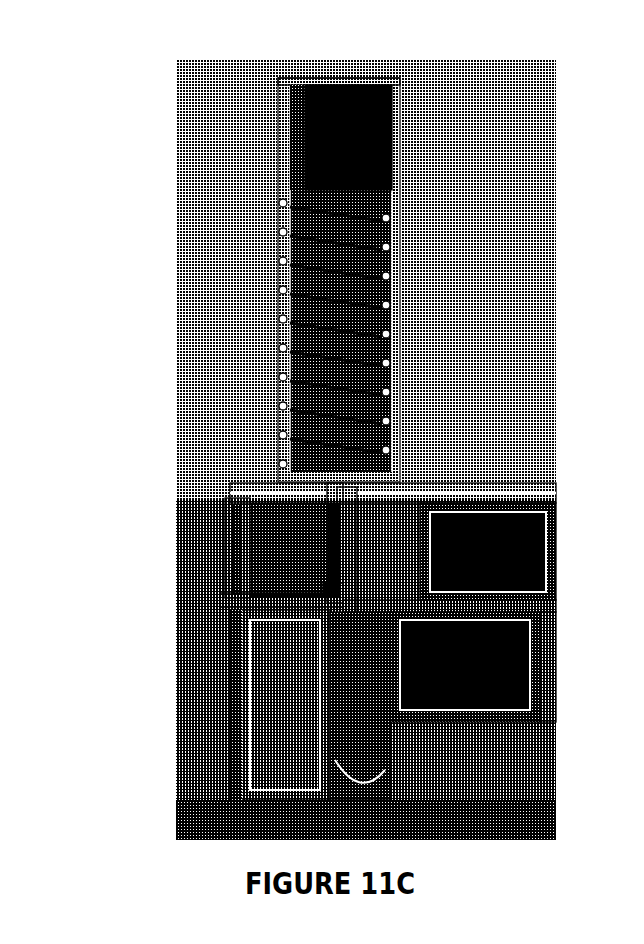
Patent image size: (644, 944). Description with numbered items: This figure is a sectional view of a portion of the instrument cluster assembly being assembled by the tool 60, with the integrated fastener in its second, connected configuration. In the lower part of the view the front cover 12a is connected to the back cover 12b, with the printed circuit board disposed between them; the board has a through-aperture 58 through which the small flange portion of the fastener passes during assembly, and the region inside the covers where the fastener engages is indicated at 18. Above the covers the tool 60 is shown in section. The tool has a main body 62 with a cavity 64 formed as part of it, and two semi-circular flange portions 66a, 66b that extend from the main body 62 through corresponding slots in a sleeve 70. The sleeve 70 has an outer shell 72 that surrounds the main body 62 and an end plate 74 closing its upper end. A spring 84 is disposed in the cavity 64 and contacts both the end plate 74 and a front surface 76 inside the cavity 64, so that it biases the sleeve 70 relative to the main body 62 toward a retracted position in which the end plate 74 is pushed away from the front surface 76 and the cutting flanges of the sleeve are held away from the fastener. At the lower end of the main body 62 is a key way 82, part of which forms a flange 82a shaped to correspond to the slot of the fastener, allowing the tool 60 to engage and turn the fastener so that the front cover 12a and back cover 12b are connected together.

The front cover 12a is at (210, 740).
The back cover 12b is at (232, 536).
The cavity 18 is at (330, 640).
The through-aperture 58 is at (525, 605).
The tool 60 is at (170, 216).
The main body 62 is at (403, 405).
The cavity 64 is at (370, 163).
The semi-circular flange portion 66a is at (393, 122).
The semi-circular flange portion 66b is at (270, 128).
The sleeve 70 is at (405, 205).
The outer shell 72 is at (405, 238).
The end plate 74 is at (355, 78).
The front surface 76 is at (270, 510).
The key way 82 is at (340, 520).
The flange 82a is at (335, 600).
The spring 84 is at (270, 228).